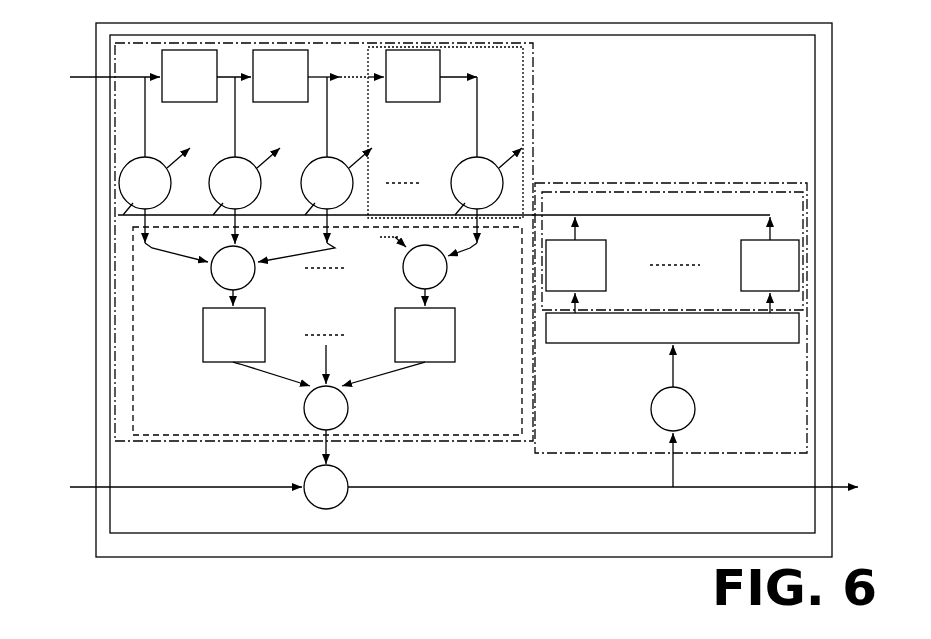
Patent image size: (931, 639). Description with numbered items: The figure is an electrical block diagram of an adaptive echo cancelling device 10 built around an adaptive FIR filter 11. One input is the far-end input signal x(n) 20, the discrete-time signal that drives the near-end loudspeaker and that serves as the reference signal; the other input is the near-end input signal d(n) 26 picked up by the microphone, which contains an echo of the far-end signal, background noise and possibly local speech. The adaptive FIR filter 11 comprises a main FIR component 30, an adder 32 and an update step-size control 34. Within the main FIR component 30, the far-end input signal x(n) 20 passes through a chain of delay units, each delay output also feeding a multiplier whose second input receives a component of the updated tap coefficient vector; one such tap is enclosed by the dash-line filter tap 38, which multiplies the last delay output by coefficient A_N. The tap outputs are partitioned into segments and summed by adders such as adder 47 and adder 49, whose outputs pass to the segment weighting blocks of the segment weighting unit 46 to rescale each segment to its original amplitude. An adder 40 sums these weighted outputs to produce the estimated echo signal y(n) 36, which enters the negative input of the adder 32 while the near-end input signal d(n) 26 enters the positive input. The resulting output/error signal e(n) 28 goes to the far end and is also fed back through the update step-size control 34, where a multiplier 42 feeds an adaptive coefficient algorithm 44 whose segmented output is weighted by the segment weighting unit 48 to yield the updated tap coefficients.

The adaptive echo cancelling device 10 is at (90, 266).
The adaptive FIR filter 11 is at (106, 236).
The far-end input signal x(n) 20 is at (90, 77).
The near-end input signal d(n) 26 is at (92, 487).
The output/error signal e(n) 28 is at (840, 482).
The main FIR component 30 is at (408, 234).
The adder 32 is at (308, 470).
The update step-size control 34 is at (702, 314).
The estimated echo signal y(n) 36 is at (320, 440).
The filter tap 38 is at (500, 47).
The adder 40 is at (304, 398).
The multiplier 42 is at (695, 395).
The adaptive coefficient algorithm 44 is at (787, 330).
The segment weighting unit 46 is at (284, 331).
The adder 47 is at (211, 266).
The segment weighting unit 48 is at (797, 221).
The adder 49 is at (406, 283).